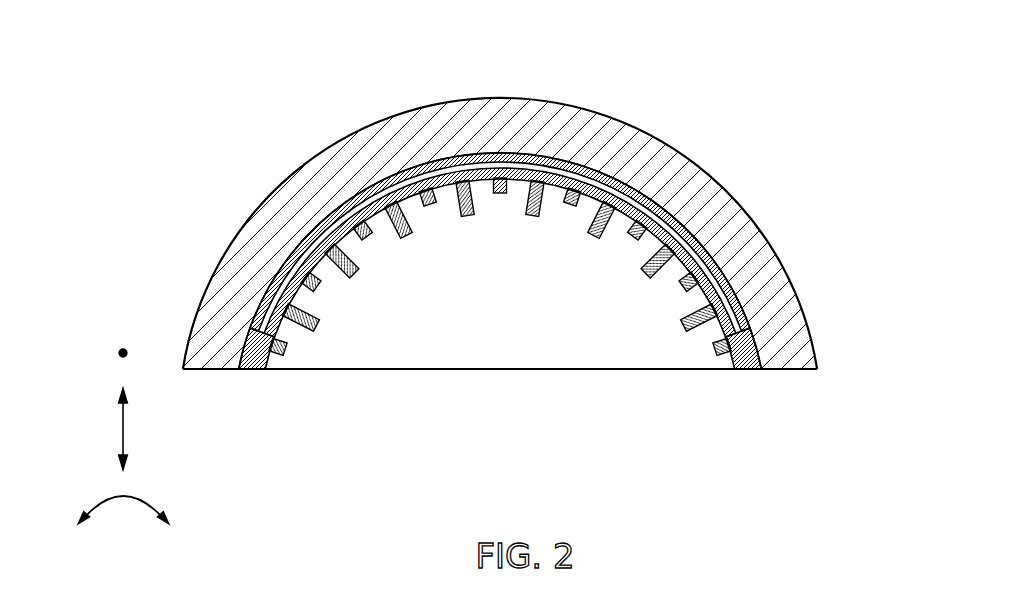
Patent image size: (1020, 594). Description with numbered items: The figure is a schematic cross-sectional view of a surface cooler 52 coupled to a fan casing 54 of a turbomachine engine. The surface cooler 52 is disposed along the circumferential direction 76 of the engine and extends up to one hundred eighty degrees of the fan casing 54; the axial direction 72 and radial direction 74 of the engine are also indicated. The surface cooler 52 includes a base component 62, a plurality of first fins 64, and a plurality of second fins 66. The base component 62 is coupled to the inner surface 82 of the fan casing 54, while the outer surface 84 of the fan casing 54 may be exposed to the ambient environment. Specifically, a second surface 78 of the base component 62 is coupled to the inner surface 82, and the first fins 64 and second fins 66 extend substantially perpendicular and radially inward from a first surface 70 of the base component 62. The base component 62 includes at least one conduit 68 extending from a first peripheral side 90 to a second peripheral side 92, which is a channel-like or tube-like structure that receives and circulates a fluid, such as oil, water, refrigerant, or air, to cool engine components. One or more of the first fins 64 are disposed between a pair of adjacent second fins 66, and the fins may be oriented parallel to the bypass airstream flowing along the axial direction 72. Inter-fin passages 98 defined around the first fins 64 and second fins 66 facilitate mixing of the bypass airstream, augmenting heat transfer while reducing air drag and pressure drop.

The surface cooler 52 is at (778, 82).
The fan casing 54 is at (578, 117).
The base component 62 is at (511, 221).
The plurality of first fins 64 is at (500, 266).
The plurality of second fins 66 is at (312, 317).
The conduit 68 is at (705, 250).
The first surface 70 is at (503, 188).
The axial direction 72 is at (119, 353).
The radial direction 74 is at (125, 428).
The circumferential direction 76 is at (123, 503).
The second surface 78 is at (660, 198).
The inner surface 82 is at (678, 217).
The outer surface 84 is at (263, 207).
The first peripheral side 90 is at (247, 371).
The second peripheral side 92 is at (753, 371).
The inter-fin passages 98 is at (652, 242).